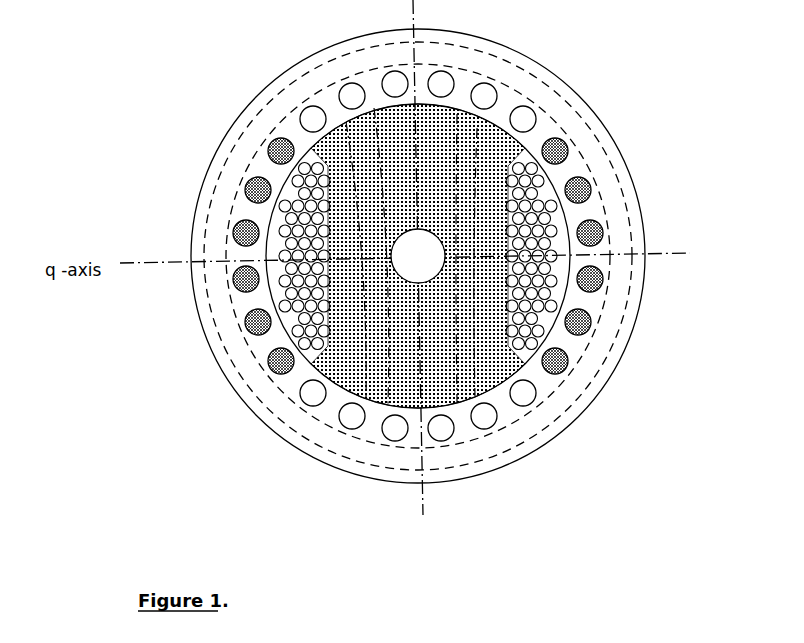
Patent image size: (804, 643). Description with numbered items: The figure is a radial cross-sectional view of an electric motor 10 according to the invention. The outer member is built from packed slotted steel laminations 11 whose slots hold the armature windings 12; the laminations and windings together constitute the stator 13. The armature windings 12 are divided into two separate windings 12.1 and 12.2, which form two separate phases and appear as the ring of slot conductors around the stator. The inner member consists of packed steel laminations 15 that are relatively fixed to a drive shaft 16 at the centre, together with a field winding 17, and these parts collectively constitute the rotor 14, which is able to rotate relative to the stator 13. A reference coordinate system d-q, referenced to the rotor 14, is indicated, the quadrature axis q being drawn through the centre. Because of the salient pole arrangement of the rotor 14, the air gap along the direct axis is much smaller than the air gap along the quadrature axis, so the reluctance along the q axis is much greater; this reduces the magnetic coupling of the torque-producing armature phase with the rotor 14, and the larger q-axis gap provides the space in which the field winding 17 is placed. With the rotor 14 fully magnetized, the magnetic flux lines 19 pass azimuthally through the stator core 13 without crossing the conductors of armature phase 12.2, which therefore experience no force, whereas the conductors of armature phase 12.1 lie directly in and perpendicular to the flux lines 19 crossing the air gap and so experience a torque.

The electric motor 10 is at (160, 32).
The packed slotted steel laminations 11 is at (472, 58).
The armature windings 12 is at (528, 110).
The first armature winding 12.1 is at (423, 260).
The second armature winding 12.2 is at (421, 254).
The stator 13 is at (645, 196).
The rotor 14 is at (491, 397).
The packed steel laminations 15 is at (366, 343).
The drive shaft 16 is at (411, 267).
The field winding 17 is at (280, 221).
The magnetic flux lines 19 is at (573, 373).